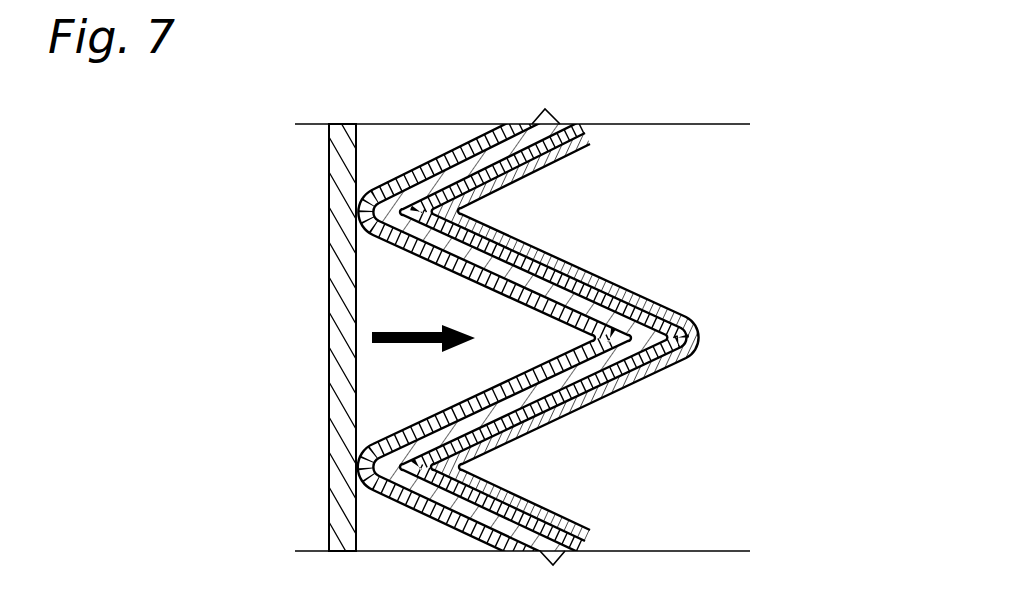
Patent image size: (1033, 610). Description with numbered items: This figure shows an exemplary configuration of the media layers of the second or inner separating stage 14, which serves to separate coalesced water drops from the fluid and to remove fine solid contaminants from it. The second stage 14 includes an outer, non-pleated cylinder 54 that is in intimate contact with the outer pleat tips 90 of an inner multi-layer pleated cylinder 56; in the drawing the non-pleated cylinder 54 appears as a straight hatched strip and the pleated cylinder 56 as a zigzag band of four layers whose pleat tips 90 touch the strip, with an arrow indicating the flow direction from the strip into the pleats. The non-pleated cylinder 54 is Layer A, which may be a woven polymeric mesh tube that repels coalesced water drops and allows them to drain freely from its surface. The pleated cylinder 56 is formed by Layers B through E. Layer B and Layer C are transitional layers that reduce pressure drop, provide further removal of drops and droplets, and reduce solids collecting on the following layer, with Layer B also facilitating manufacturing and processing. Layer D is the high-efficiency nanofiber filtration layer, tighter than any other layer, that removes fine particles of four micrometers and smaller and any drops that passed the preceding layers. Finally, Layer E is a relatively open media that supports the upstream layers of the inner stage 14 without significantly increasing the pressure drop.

The second stage 14 is at (697, 85).
The non-pleated cylinder 54 is at (306, 329).
The multi-layer pleated cylinder 56 is at (480, 334).
The outer pleat tips 90 is at (358, 222).
The Layer A is at (350, 552).
The Layer B is at (446, 339).
The Layer C is at (553, 560).
The Layer D is at (580, 552).
The Layer E is at (607, 552).